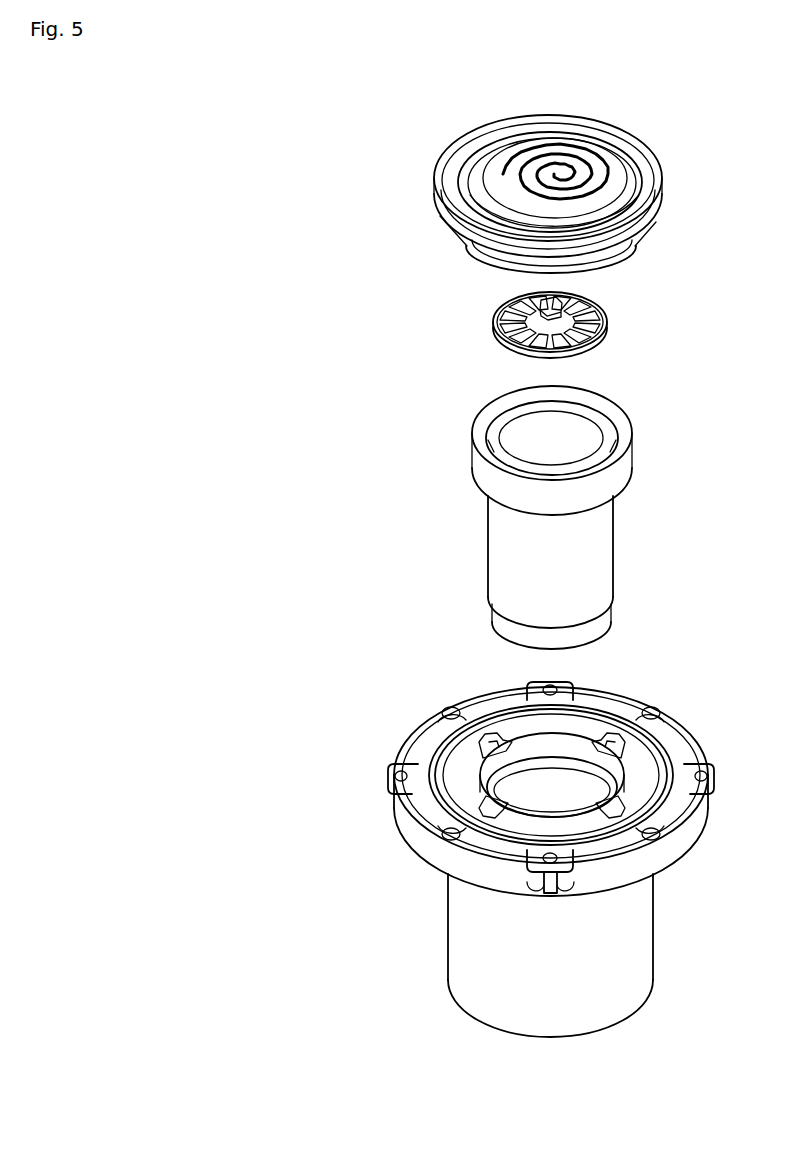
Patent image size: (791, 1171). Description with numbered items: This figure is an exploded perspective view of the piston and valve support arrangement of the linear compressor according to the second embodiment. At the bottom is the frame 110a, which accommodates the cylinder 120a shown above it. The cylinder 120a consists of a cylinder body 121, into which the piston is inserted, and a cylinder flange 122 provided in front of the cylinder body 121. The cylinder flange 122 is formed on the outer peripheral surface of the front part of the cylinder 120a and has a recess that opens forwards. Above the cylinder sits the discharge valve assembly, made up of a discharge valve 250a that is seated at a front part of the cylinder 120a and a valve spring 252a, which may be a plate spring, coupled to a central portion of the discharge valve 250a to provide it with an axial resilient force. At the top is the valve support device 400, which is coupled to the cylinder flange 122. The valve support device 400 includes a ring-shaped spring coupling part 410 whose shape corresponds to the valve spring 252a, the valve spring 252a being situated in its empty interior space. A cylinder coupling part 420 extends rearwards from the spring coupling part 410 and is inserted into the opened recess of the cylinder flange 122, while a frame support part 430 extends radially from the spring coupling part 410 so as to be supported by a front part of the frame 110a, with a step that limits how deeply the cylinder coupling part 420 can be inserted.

The valve support device 400 is at (531, 180).
The spring coupling part 410 is at (628, 188).
The cylinder coupling part 420 is at (582, 270).
The frame support part 430 is at (640, 238).
The valve spring 252a is at (498, 165).
The discharge valve 250a is at (493, 318).
The cylinder 120a is at (547, 517).
The cylinder body 121 is at (513, 575).
The cylinder flange 122 is at (490, 466).
The frame 110a is at (393, 775).